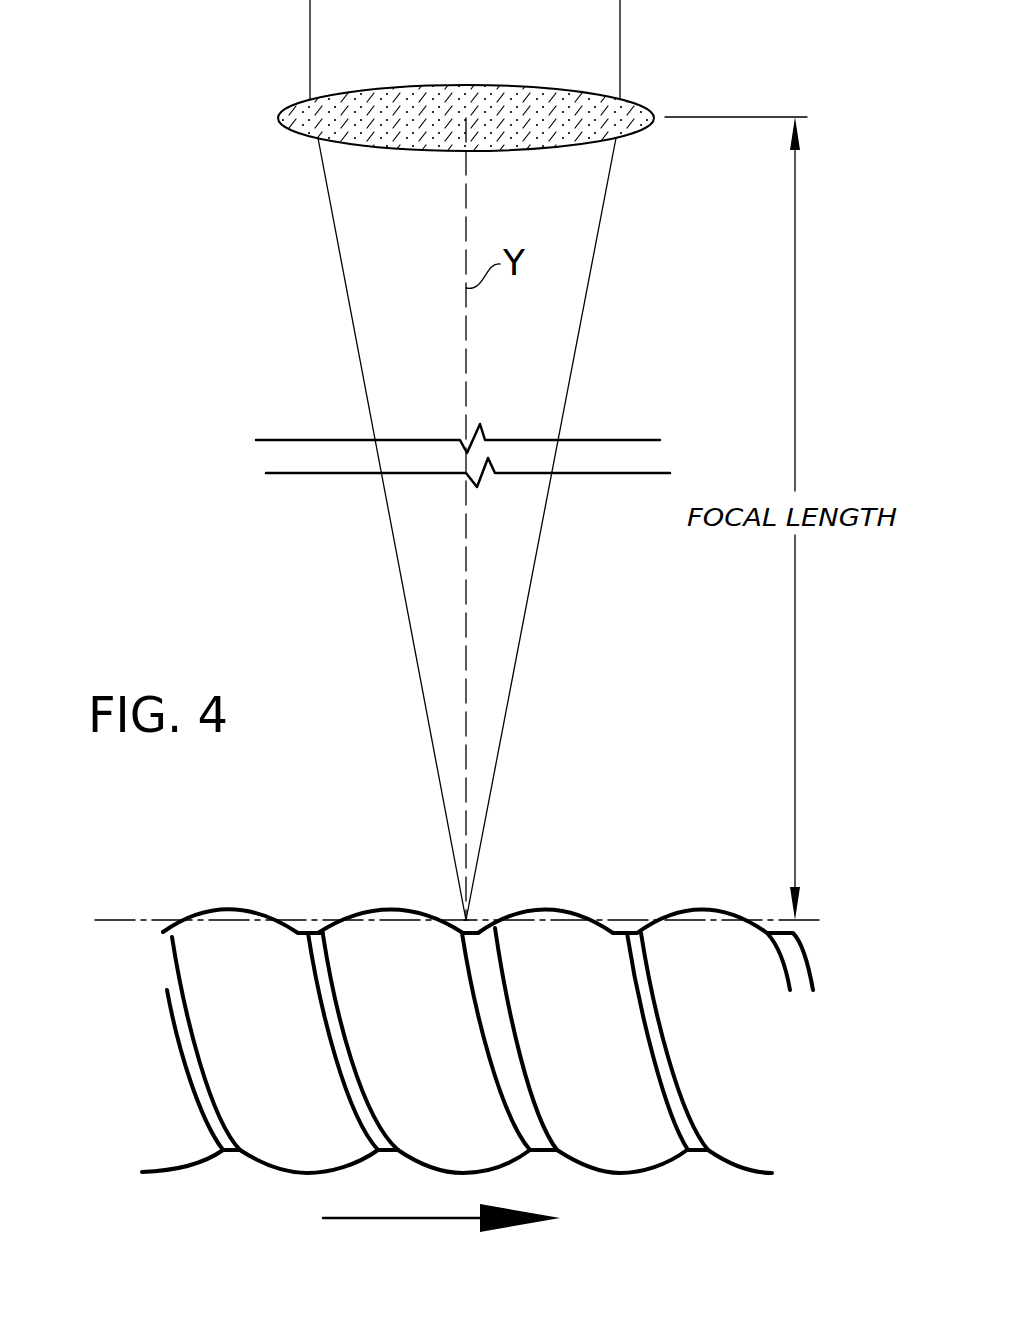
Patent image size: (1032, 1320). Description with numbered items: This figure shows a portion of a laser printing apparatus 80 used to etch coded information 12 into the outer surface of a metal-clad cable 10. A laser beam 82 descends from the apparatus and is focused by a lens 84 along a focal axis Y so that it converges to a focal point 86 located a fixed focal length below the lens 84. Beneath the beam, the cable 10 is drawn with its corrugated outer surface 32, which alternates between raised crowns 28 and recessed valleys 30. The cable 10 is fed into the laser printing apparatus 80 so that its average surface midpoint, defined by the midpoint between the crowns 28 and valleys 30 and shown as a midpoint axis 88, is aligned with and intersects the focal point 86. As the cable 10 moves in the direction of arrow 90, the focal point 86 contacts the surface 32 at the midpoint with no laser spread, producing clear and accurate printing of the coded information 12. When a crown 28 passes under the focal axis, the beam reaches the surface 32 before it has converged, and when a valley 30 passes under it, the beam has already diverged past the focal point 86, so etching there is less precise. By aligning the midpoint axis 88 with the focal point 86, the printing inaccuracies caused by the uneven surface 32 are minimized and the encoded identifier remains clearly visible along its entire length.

The cable 10 is at (110, 835).
The coded information 12 is at (822, 1109).
The crown 28 is at (387, 908).
The valley 30 is at (310, 950).
The outer surface 32 is at (232, 908).
The laser printing apparatus 80 is at (152, 396).
The laser beam 82 is at (573, 357).
The lens 84 is at (505, 86).
The focal point 86 is at (468, 918).
The midpoint axis 88 is at (132, 923).
The arrow 90 is at (393, 1218).